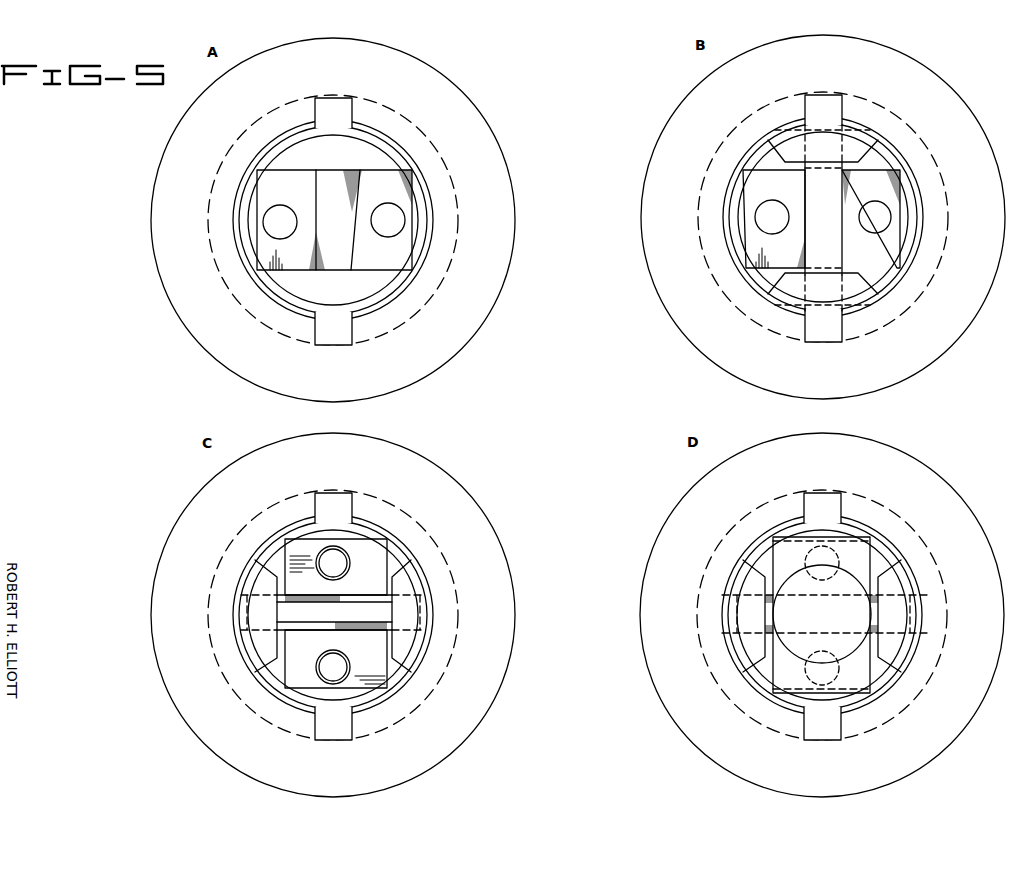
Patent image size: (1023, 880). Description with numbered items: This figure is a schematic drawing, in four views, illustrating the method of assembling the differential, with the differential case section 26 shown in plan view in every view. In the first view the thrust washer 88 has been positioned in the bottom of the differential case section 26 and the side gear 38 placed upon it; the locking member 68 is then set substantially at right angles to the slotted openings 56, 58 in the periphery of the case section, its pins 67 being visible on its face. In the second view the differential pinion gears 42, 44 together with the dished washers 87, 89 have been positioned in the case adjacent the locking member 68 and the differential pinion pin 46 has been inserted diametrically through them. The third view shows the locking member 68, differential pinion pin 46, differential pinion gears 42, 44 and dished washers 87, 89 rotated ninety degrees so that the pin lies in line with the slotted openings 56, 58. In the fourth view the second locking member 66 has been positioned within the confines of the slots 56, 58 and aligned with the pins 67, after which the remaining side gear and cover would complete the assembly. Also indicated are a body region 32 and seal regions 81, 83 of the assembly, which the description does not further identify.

The differential case section 26 is at (469, 89).
The housing body 32 is at (569, 416).
The side gear 38 is at (386, 293).
The axial slot 56 is at (331, 101).
The axial slot 58 is at (331, 336).
The locking member 66 is at (790, 558).
The pins 67 is at (285, 214).
The locking member 68 is at (270, 189).
The seal 81 is at (351, 190).
The seal 83 is at (316, 258).
The thrust washer 88 is at (374, 158).
The differential pinion pin 46 is at (831, 225).
The differential pinion gear 42 is at (560, 387).
The dished washer 87 is at (857, 131).
The differential pinion gear 44 is at (691, 472).
The dished washer 89 is at (790, 306).